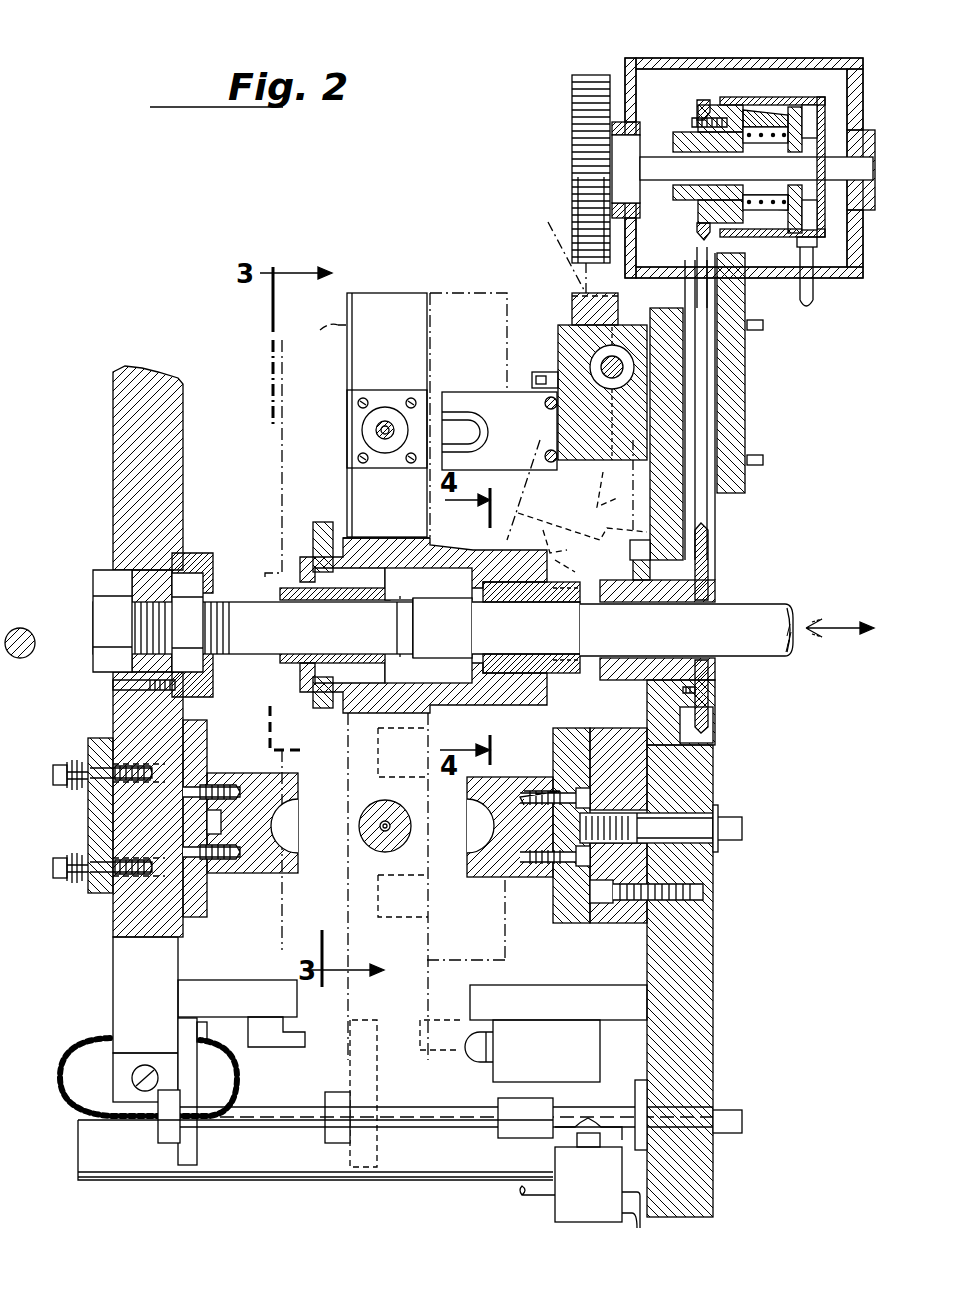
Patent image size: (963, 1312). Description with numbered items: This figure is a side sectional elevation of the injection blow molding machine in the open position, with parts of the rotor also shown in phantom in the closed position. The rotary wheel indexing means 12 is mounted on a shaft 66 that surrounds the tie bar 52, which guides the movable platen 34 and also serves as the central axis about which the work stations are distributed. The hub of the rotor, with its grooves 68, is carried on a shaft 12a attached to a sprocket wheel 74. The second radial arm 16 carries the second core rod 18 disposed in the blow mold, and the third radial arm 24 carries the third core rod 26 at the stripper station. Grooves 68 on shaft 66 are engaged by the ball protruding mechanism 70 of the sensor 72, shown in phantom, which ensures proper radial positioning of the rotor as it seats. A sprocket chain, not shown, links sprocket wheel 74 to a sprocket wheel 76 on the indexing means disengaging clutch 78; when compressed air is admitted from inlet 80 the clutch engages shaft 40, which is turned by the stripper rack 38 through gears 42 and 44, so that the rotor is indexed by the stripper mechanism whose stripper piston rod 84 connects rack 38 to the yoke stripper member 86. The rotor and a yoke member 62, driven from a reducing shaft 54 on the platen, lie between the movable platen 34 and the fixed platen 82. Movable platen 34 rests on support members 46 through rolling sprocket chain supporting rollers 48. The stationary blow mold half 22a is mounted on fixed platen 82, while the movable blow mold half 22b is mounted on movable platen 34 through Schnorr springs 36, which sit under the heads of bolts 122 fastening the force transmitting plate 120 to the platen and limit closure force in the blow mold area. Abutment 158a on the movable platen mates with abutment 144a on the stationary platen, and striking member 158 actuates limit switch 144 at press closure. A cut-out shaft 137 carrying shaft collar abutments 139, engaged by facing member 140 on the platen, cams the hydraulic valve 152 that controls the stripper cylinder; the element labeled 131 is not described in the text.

The rotary wheel indexing means 12 is at (360, 596).
The hub shaft 12a is at (560, 680).
The second radial arm 16 is at (410, 960).
The second core rod 18 is at (385, 826).
The stationary blow mold half 22a is at (512, 877).
The movable blow mold half 22b is at (256, 872).
The third radial arm 24 is at (415, 296).
The third core rod 26 is at (385, 421).
The movable platen 34 is at (155, 380).
The Schnorr springs 36 is at (78, 858).
The rack 38 is at (618, 299).
The shaft 40 is at (655, 160).
The gear 42 is at (551, 245).
The gear 44 is at (578, 90).
The support members 46 is at (432, 1158).
The sprocket chain supporting rollers 48 is at (132, 1102).
The tie bar 52 is at (735, 622).
The reducing shaft 54 is at (25, 630).
The yoke member 62 is at (313, 538).
The shaft 66 is at (343, 537).
The grooves 68 is at (573, 557).
The ball protruding mechanism 70 is at (582, 536).
The 360°–180° sensor 72 is at (570, 490).
The sprocket wheel 74 is at (705, 540).
The sprocket wheel 76 is at (702, 98).
The indexing means disengaging clutch 78 is at (760, 118).
The inlet 80 is at (812, 298).
The fixed platen 82 is at (705, 1005).
The stripper piston rod 84 is at (636, 362).
The yoke stripper member 86 is at (487, 398).
The force transmitting plate 120 is at (100, 893).
The bolts 122 is at (118, 768).
The slide block 131 is at (528, 1100).
The cut-out shaft 137 is at (440, 1090).
The shaft collar abutments 139 is at (170, 1146).
The facing member 140 is at (187, 1148).
The limit switch 144 is at (476, 1060).
The abutment 144a is at (472, 1002).
The hydraulic valve 152 is at (567, 1200).
The striking member 158 is at (305, 1047).
The abutment 158a is at (305, 1000).